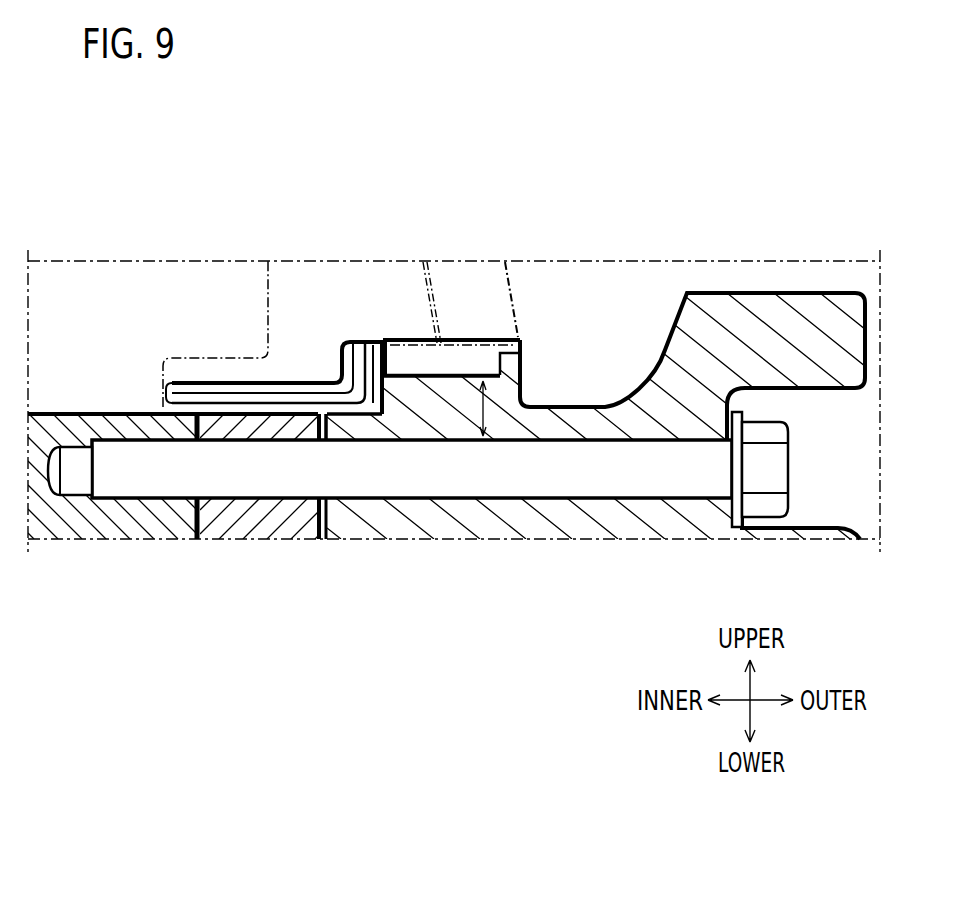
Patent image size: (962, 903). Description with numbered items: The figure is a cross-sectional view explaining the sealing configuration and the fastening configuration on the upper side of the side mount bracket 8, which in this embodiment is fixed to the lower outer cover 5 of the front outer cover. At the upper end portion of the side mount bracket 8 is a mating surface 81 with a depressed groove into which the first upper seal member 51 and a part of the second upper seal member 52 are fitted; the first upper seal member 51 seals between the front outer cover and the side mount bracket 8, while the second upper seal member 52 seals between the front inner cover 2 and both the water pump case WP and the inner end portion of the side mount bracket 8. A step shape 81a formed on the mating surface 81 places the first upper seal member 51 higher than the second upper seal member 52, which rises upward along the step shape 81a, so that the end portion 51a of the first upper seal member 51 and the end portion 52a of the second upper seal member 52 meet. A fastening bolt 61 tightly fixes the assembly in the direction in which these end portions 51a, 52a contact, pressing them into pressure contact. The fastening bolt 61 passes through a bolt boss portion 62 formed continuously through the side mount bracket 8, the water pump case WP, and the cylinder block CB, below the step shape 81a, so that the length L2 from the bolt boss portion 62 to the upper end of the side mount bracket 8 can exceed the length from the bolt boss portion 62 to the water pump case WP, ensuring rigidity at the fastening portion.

The front inner cover 2 is at (336, 288).
The lower outer cover 5 is at (460, 288).
The first upper seal member 51 is at (475, 353).
The end portion of the first upper seal member 51a is at (386, 348).
The second upper seal member 52 is at (312, 392).
The end portion of the second upper seal member 52a is at (373, 357).
The side mount bracket 8 is at (513, 520).
The mating surface 81 is at (378, 410).
The step shape 81a is at (400, 425).
The fastening bolt 61 is at (633, 483).
The bolt boss portion 62 is at (685, 485).
The length from the bolt boss portion to the upper end of the side mount bracket L2 is at (487, 383).
The cylinder block CB is at (112, 527).
The water pump case WP is at (245, 527).